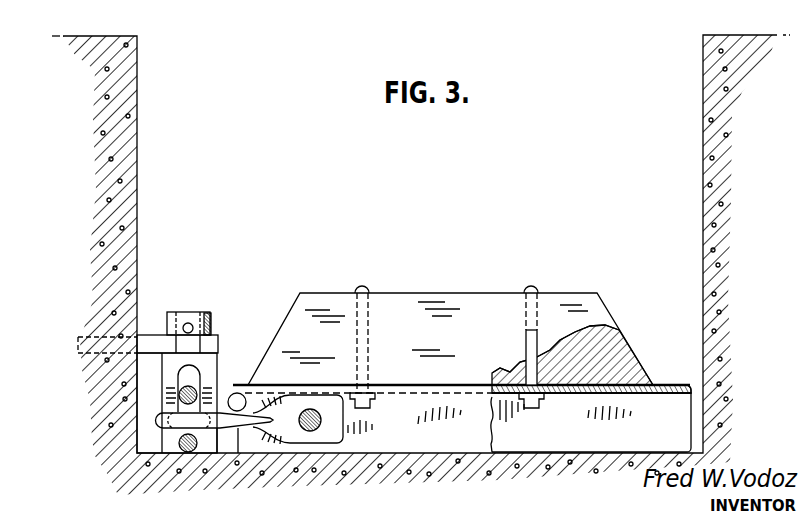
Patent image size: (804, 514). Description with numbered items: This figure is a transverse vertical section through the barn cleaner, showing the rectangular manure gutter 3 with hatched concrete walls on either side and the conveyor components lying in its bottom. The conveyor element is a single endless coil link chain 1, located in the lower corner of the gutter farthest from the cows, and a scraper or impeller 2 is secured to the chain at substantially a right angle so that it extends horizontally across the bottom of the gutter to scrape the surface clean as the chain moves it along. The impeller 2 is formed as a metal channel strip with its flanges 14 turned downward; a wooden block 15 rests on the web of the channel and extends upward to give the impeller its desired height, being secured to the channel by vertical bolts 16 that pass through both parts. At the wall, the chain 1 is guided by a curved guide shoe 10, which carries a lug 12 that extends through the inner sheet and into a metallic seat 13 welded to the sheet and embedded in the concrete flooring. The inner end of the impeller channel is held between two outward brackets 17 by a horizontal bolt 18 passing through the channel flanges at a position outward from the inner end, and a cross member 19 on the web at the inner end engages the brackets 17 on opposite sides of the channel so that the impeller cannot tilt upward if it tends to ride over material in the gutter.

The coil link chain 1 is at (180, 442).
The impeller 2 is at (661, 376).
The manure gutter 3 is at (680, 150).
The guide shoe 10 is at (212, 363).
The lug 12 is at (186, 317).
The metallic seat 13 is at (208, 310).
The flanges 14 is at (478, 442).
The wooden block 15 is at (572, 305).
The vertical bolts 16 is at (369, 283).
The outward brackets 17 is at (273, 445).
The horizontal bolt 18 is at (311, 430).
The cross member 19 is at (229, 388).